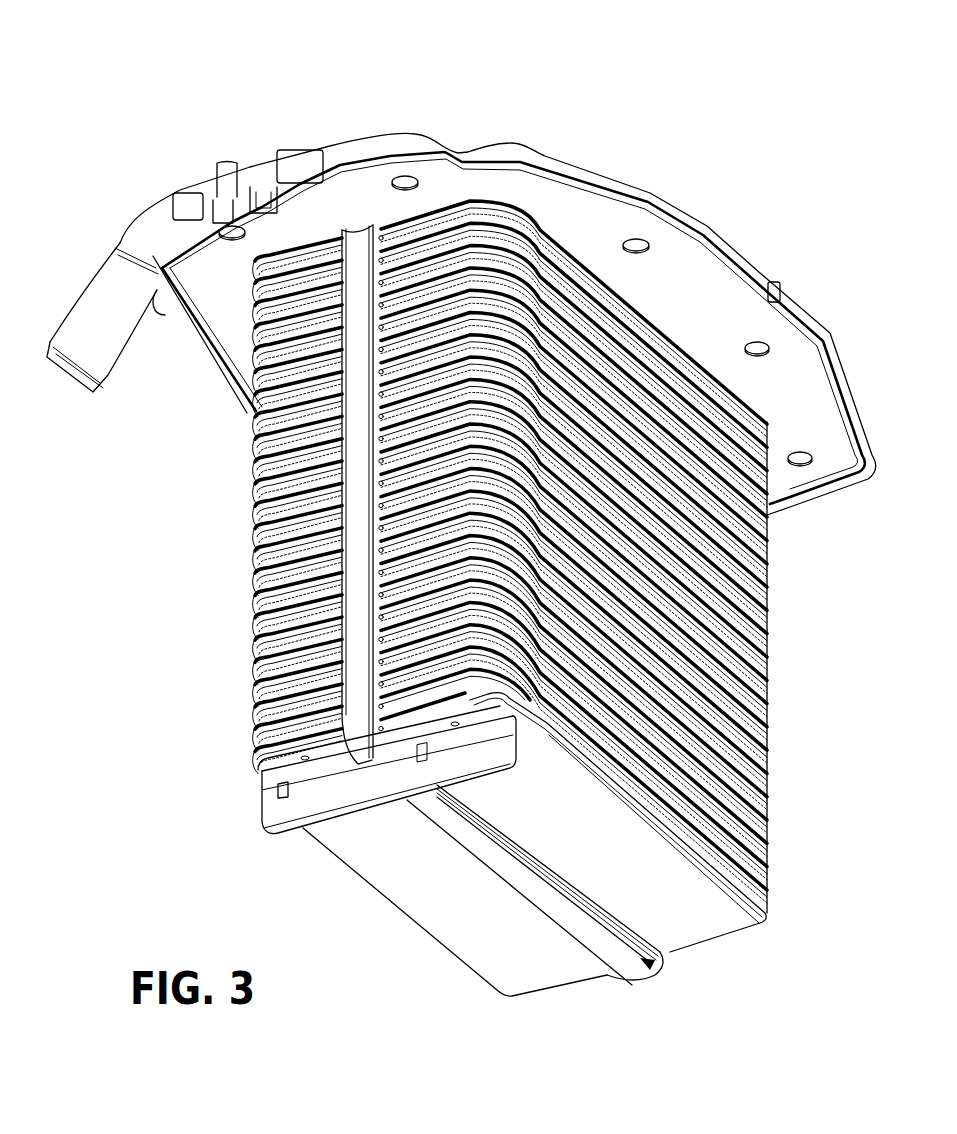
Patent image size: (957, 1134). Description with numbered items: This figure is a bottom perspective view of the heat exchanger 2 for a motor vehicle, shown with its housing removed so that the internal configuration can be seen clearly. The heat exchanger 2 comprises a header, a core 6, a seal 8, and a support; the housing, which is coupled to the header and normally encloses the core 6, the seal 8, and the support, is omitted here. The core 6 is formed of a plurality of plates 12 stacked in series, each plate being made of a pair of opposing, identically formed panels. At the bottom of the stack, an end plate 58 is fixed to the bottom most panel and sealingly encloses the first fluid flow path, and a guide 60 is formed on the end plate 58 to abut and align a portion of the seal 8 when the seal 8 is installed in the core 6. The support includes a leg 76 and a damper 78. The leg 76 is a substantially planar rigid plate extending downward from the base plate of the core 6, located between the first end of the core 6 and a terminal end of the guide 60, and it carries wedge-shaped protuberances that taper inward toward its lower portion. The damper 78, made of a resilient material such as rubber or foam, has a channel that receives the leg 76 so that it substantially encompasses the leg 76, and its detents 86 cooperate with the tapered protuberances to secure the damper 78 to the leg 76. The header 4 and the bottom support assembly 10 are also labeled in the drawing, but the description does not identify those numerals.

The heat exchanger 2 is at (202, 74).
The top plate 4 is at (598, 160).
The core 6 is at (782, 632).
The plates 12 is at (240, 431).
The bottom plate assembly 10 is at (292, 845).
The leg 76 is at (250, 763).
The damper 78 is at (250, 821).
The detents 86 is at (283, 792).
The end plate 58 is at (527, 992).
The guide 60 is at (610, 907).
The seal 8 is at (659, 1000).